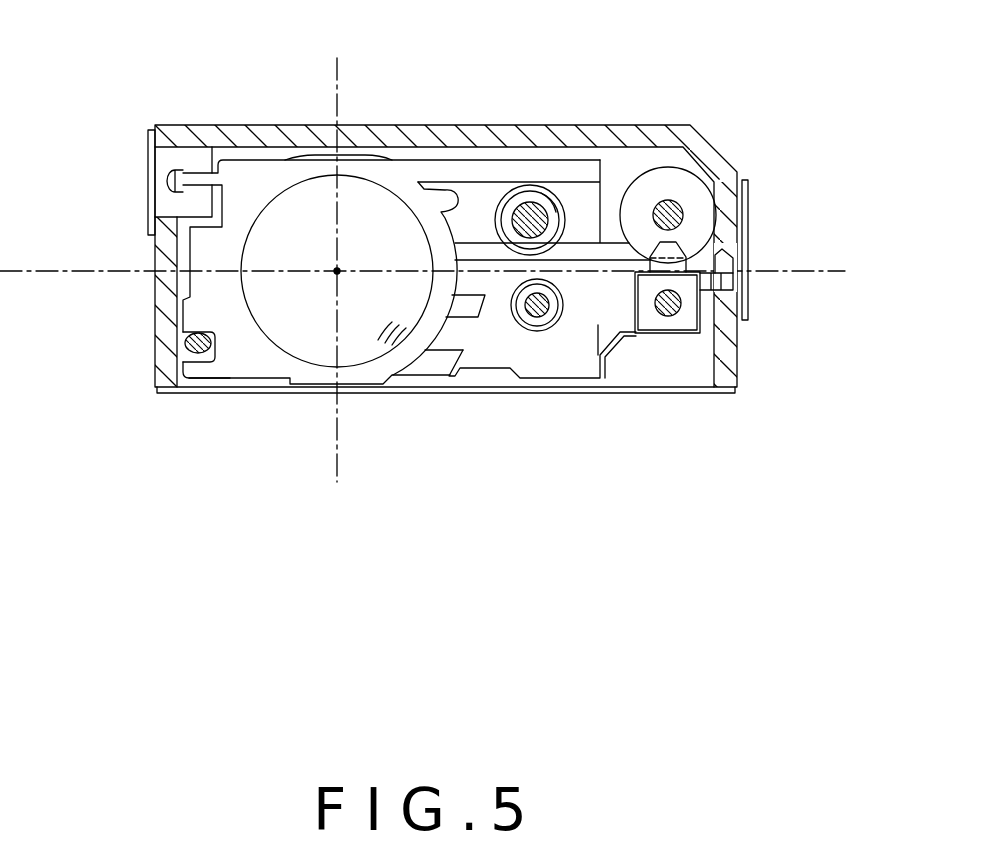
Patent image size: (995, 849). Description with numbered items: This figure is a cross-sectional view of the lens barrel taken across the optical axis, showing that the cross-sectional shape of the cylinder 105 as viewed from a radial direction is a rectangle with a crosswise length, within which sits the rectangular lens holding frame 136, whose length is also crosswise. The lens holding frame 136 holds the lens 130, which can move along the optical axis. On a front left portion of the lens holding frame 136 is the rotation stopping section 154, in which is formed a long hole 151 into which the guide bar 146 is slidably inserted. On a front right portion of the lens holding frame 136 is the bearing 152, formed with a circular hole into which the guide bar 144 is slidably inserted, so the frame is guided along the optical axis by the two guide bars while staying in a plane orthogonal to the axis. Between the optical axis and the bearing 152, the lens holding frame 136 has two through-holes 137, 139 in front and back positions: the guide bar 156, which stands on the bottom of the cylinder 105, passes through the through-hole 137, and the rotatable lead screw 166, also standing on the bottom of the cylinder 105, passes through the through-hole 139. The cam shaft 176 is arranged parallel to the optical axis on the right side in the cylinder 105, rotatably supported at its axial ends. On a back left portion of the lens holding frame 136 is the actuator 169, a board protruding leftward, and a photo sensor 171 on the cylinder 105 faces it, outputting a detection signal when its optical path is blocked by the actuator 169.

The cylinder 105 is at (293, 126).
The lens 130 is at (378, 213).
The lens holding frame 136 is at (247, 382).
The through-hole 137 is at (527, 313).
The through-hole 139 is at (541, 193).
The guide bar 144 is at (680, 306).
The guide bar 146 is at (185, 338).
The long hole 151 is at (182, 348).
The bearing 152 is at (668, 334).
The rotation stopping section 154 is at (204, 380).
The guide bar 156 is at (547, 308).
The lead screw 166 is at (529, 205).
The actuator 169 is at (198, 170).
The photo sensor 171 is at (160, 127).
The cam shaft 176 is at (697, 168).